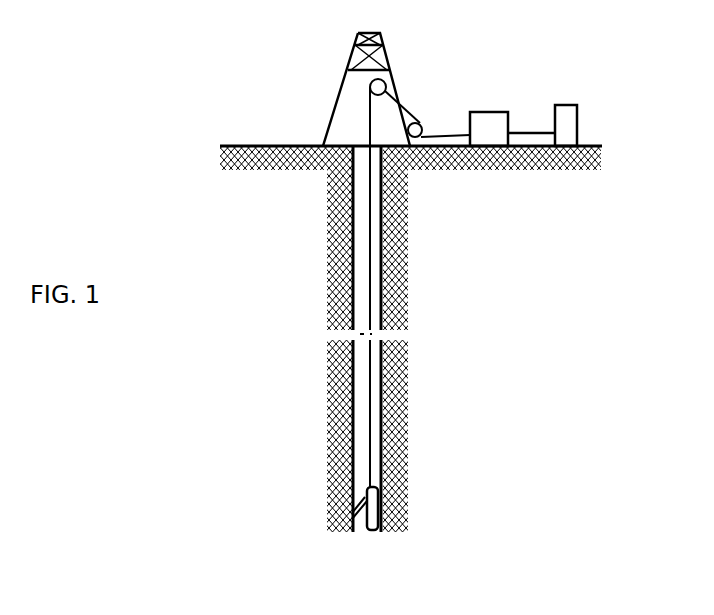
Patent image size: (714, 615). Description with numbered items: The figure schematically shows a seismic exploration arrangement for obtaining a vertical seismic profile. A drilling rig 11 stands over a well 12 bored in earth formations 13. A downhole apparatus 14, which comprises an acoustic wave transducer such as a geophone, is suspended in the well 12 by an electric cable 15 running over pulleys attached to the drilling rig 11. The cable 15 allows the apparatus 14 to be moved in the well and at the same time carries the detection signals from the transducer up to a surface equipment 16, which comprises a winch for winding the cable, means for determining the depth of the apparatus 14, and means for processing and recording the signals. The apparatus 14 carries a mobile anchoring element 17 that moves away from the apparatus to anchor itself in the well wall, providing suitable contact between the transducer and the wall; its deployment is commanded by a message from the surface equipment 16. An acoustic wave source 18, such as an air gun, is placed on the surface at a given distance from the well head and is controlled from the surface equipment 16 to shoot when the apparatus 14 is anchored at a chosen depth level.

The drilling rig 11 is at (352, 92).
The well 12 is at (385, 226).
The earth formations 13 is at (400, 279).
The downhole apparatus 14 is at (380, 500).
The electric cable 15 is at (373, 394).
The surface equipment 16 is at (487, 108).
The mobile anchoring element 17 is at (347, 497).
The acoustic wave source 18 is at (563, 102).